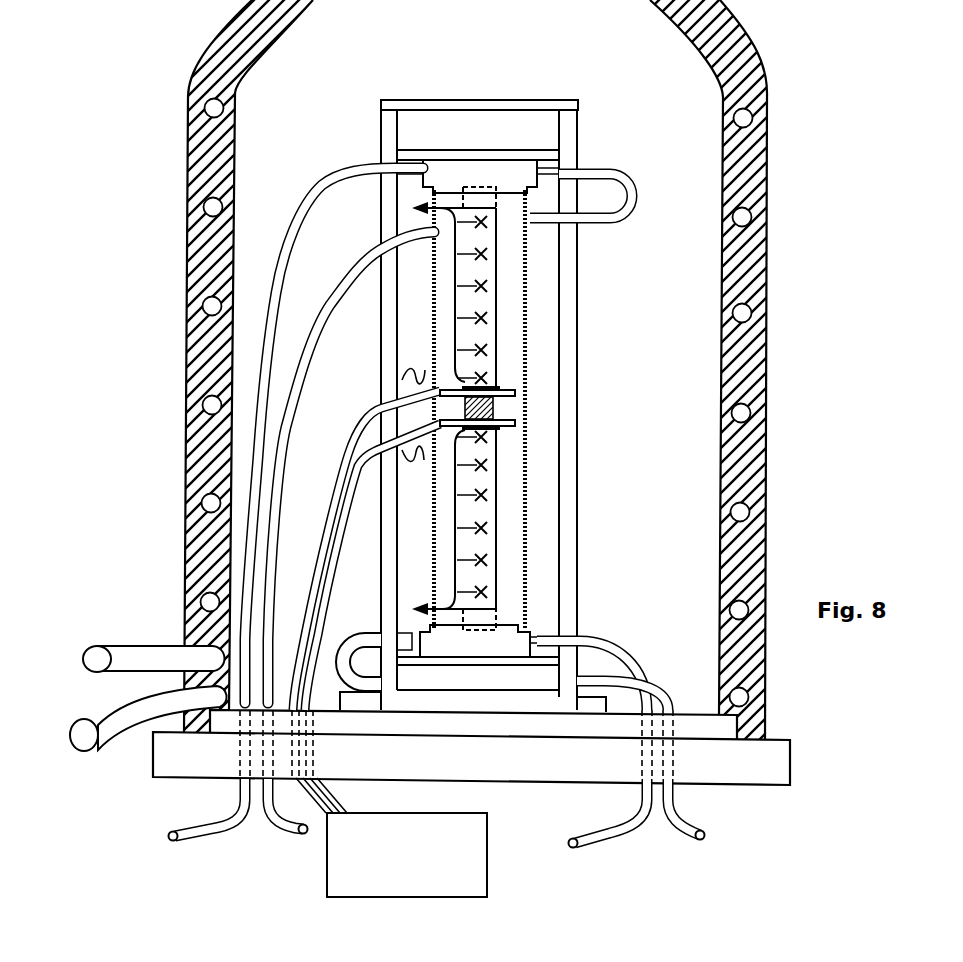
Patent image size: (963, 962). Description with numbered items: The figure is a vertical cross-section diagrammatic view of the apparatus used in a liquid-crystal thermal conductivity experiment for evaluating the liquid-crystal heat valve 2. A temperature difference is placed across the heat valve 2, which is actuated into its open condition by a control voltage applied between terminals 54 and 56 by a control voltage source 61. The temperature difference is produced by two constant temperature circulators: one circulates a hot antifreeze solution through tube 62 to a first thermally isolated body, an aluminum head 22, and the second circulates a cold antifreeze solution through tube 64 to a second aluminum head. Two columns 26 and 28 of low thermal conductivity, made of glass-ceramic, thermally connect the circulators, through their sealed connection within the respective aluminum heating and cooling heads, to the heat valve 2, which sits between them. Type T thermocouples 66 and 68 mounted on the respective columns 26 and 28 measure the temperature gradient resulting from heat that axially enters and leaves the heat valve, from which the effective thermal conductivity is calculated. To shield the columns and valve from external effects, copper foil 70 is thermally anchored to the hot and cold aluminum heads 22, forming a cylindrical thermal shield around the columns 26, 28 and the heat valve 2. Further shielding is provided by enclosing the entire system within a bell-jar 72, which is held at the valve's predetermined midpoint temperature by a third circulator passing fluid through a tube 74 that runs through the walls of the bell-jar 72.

The heat valve 2 is at (494, 408).
The aluminum head 22 is at (475, 168).
The column 26 is at (487, 289).
The column 28 is at (486, 527).
The terminal 54 is at (322, 787).
The terminal 56 is at (340, 787).
The control voltage source 61 is at (487, 870).
The tube 62 is at (282, 834).
The tube 64 is at (677, 838).
The thermocouple 66 is at (482, 320).
The thermocouple 68 is at (483, 478).
The copper foil 70 is at (432, 340).
The bell-jar 72 is at (767, 338).
The tube 74 is at (86, 715).